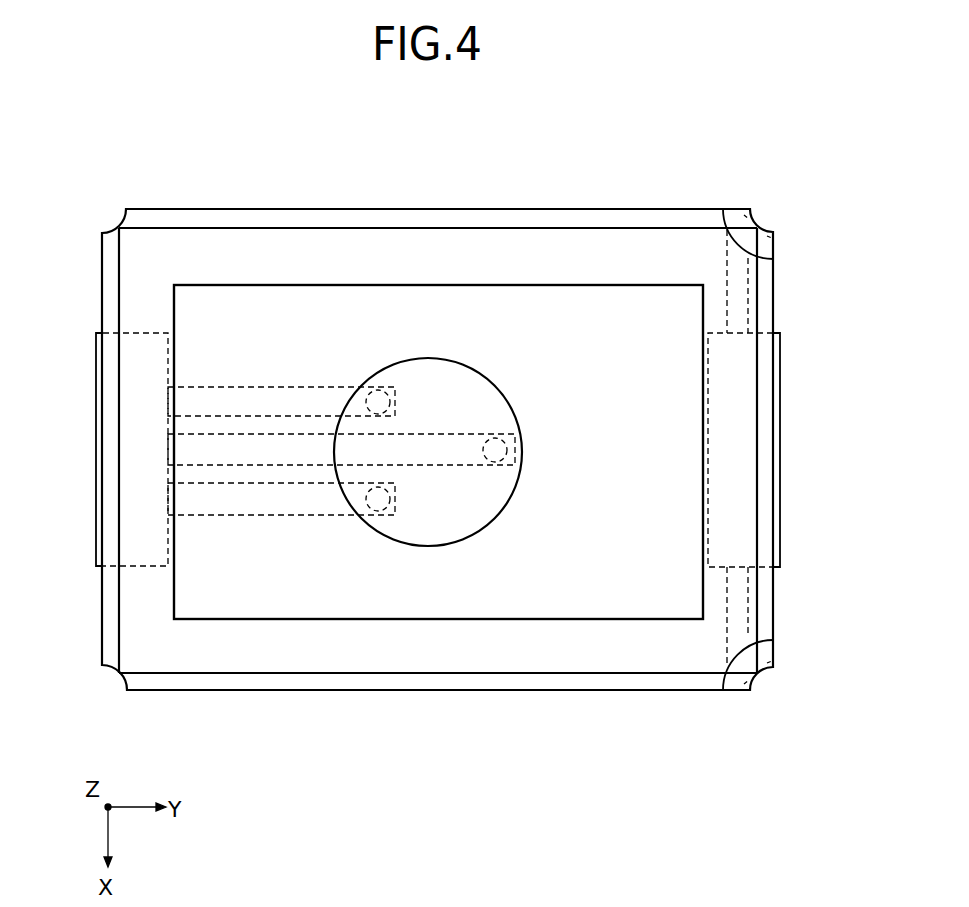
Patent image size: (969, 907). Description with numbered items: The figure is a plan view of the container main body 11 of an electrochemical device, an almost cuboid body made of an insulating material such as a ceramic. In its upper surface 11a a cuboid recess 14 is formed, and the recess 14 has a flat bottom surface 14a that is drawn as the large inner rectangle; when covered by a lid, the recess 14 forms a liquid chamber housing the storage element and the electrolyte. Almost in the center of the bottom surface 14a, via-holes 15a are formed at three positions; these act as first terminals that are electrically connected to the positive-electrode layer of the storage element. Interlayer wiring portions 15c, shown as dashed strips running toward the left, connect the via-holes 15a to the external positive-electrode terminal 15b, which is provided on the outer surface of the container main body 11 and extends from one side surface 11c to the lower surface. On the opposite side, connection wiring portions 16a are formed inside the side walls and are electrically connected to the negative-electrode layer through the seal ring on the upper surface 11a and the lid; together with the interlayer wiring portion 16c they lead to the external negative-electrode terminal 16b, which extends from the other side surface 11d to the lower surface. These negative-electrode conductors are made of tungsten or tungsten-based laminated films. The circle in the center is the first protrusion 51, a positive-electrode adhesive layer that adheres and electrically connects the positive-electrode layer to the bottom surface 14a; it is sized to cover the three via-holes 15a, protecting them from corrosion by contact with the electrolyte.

The container main body 11 is at (690, 187).
The upper surface 11a is at (147, 252).
The one side surface 11c is at (102, 608).
The other side surface 11d is at (773, 300).
The recess 14 is at (578, 620).
The bottom surface 14a is at (545, 515).
The via-holes 15a is at (385, 391).
The external positive-electrode terminal 15b is at (96, 389).
The interlayer wiring portions 15c is at (320, 387).
The connection wiring portions 16a is at (768, 652).
The external negative-electrode terminal 16b is at (780, 398).
The interlayer wiring portion 16c is at (744, 607).
The first protrusion 51 is at (387, 536).